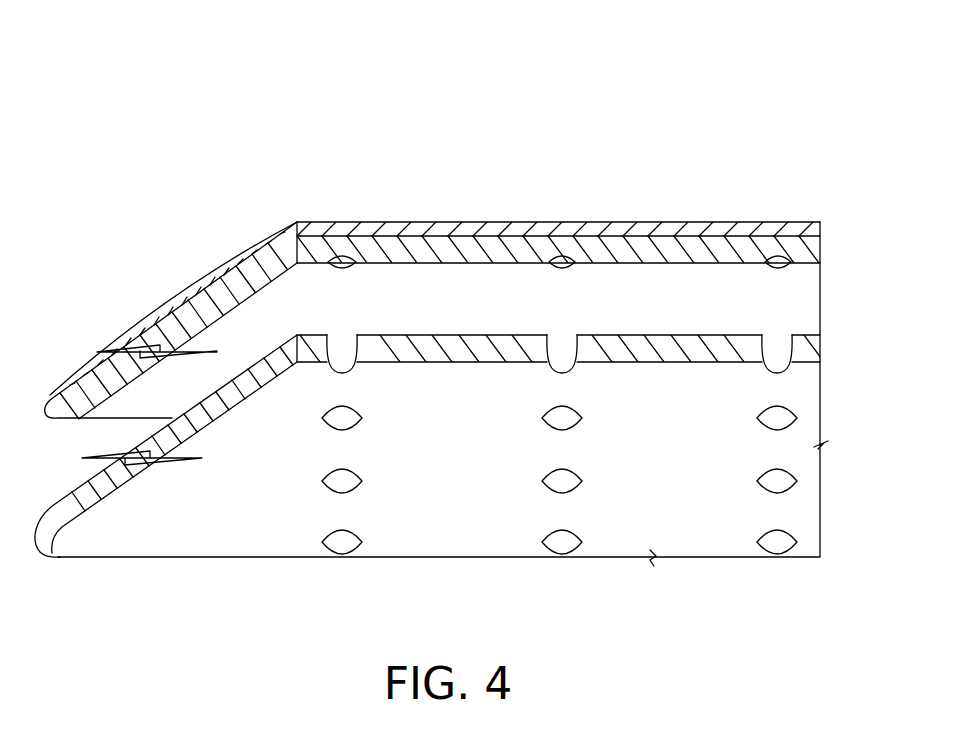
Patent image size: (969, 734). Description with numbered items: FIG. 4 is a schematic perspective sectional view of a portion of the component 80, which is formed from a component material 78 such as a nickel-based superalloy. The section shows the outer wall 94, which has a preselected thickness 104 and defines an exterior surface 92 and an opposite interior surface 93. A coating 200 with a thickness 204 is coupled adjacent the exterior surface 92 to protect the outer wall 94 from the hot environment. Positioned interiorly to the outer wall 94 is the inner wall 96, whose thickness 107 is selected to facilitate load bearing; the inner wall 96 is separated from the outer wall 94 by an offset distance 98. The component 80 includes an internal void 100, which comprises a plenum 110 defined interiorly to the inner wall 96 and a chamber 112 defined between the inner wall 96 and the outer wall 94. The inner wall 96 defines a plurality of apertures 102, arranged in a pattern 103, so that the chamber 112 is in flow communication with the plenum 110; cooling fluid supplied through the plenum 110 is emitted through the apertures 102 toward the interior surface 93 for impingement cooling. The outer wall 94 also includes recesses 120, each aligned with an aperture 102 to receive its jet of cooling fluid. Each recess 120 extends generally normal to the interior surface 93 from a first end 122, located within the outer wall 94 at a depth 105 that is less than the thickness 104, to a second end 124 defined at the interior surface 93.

The component 80 is at (352, 95).
The component material 78 is at (322, 272).
The exterior surface 92 is at (727, 236).
The interior surface 93 is at (748, 268).
The outer wall 94 is at (820, 248).
The inner wall 96 is at (820, 343).
The offset distance 98 is at (680, 332).
The internal void 100 is at (481, 396).
The apertures 102 is at (367, 423).
The pattern 103 is at (810, 580).
The outer wall thickness 104 is at (395, 300).
The depth 105 is at (368, 300).
The inner wall thickness 107 is at (433, 298).
The plenum 110 is at (528, 643).
The chamber 112 is at (466, 305).
The recesses 120 is at (562, 272).
The first end 122 is at (322, 254).
The second end 124 is at (232, 272).
The coating 200 is at (695, 222).
The coating thickness 204 is at (905, 262).